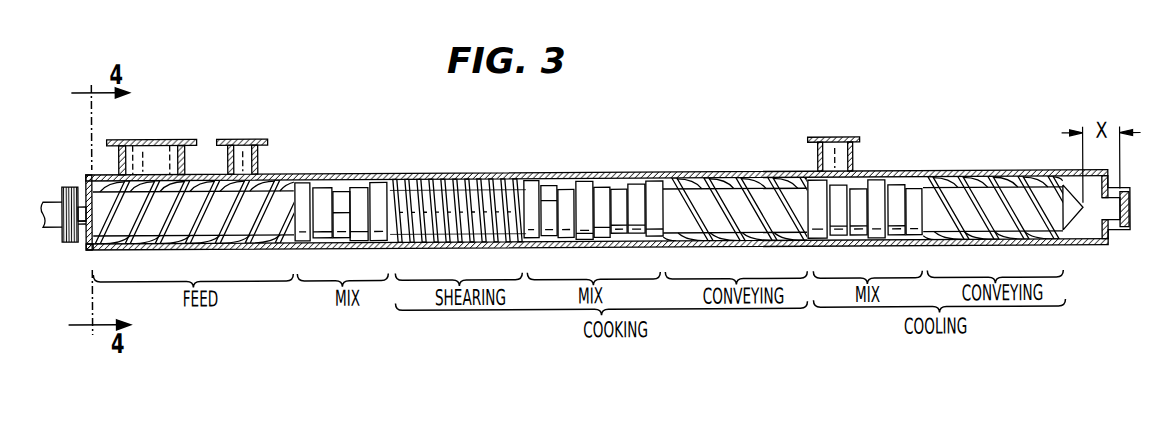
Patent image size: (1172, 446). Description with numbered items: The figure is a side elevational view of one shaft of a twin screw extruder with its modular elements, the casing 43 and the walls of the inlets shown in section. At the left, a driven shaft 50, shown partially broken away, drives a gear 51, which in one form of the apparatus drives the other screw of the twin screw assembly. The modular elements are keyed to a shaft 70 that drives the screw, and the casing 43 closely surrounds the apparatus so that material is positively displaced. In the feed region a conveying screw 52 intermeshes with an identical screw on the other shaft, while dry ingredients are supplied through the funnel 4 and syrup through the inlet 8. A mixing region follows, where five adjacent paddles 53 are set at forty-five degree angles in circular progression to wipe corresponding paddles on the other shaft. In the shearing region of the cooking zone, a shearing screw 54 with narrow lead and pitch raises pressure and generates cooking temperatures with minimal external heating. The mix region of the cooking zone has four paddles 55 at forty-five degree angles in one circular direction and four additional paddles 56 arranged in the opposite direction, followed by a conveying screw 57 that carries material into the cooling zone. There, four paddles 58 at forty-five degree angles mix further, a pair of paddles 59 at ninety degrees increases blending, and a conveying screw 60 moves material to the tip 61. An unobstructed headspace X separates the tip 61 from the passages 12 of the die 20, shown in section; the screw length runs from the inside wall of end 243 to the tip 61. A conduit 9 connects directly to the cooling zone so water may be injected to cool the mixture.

The funnel 4 is at (163, 153).
The inlet 8 is at (248, 158).
The conduit 9 is at (845, 140).
The passages 12 is at (1130, 206).
The die 20 is at (1131, 193).
The casing 43 is at (127, 252).
The driven shaft 50 is at (50, 202).
The gear 51 is at (65, 188).
The conveying screw 52 is at (92, 256).
The paddles 53 is at (313, 186).
The shearing screw 54 is at (458, 185).
The paddles 55 is at (542, 185).
The paddles 56 is at (600, 190).
The conveying screw 57 is at (725, 181).
The paddles 58 is at (820, 181).
The paddles 59 is at (892, 194).
The conveying screw 60 is at (967, 177).
The tip 61 is at (1075, 236).
The shaft 70 is at (82, 232).
The end 243 is at (86, 176).